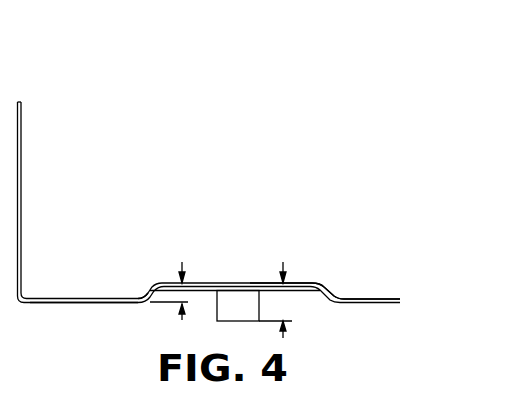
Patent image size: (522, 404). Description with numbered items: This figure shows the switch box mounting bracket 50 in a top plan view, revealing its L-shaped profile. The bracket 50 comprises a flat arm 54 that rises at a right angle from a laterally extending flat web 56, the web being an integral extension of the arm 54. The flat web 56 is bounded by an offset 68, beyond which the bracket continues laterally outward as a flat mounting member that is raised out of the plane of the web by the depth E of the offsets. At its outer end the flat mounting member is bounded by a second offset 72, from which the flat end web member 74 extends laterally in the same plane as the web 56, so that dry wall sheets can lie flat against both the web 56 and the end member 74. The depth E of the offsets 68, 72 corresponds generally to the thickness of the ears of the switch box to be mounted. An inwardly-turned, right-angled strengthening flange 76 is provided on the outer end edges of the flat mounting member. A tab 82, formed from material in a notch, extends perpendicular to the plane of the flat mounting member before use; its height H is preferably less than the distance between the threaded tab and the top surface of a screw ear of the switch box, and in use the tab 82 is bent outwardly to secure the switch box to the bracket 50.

The bracket 50 is at (243, 256).
The flat arm 54 is at (22, 166).
The flat web 56 is at (86, 303).
The offset 68 is at (147, 299).
The offset 72 is at (333, 296).
The flat end web member 74 is at (7, 78).
The strengthening flange 76 is at (296, 283).
The tab 82 is at (229, 313).
The depth of the offsets E is at (182, 318).
The height of the tabs H is at (279, 300).